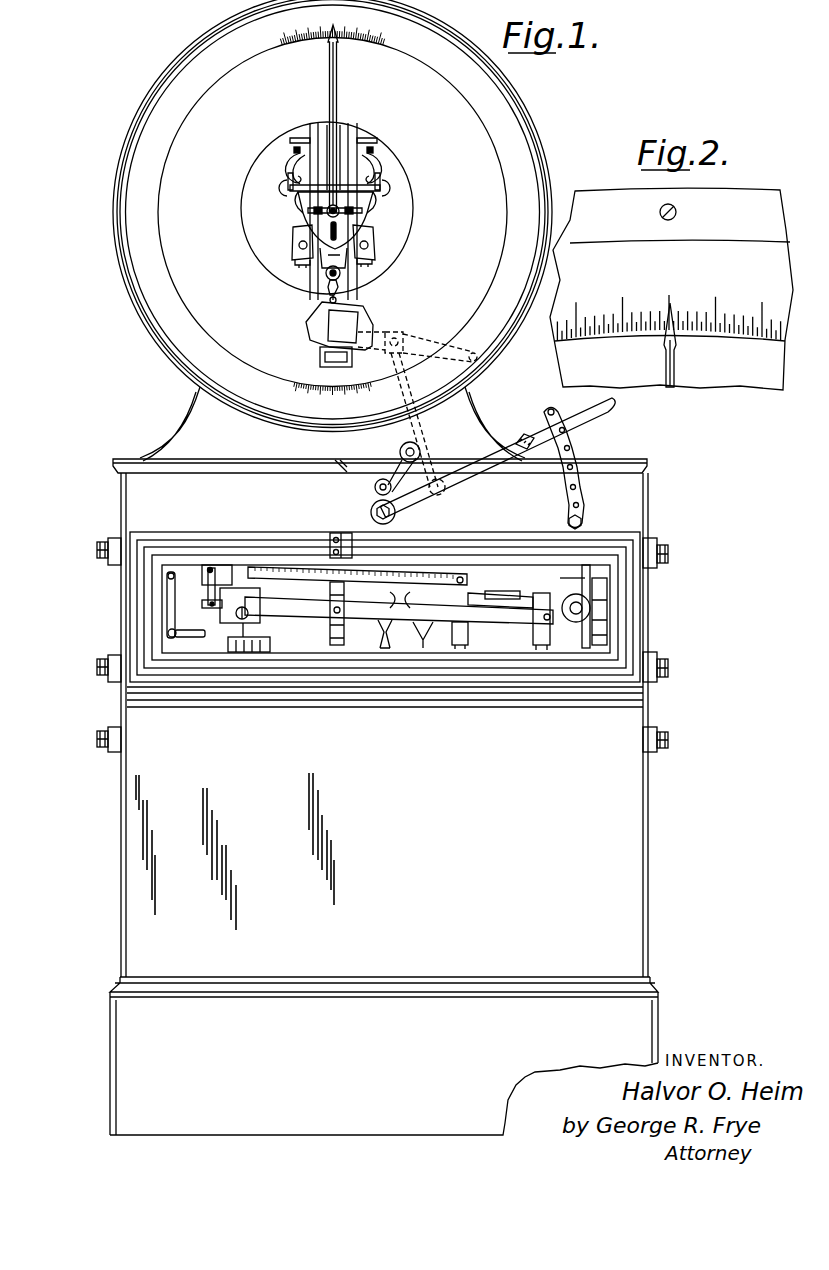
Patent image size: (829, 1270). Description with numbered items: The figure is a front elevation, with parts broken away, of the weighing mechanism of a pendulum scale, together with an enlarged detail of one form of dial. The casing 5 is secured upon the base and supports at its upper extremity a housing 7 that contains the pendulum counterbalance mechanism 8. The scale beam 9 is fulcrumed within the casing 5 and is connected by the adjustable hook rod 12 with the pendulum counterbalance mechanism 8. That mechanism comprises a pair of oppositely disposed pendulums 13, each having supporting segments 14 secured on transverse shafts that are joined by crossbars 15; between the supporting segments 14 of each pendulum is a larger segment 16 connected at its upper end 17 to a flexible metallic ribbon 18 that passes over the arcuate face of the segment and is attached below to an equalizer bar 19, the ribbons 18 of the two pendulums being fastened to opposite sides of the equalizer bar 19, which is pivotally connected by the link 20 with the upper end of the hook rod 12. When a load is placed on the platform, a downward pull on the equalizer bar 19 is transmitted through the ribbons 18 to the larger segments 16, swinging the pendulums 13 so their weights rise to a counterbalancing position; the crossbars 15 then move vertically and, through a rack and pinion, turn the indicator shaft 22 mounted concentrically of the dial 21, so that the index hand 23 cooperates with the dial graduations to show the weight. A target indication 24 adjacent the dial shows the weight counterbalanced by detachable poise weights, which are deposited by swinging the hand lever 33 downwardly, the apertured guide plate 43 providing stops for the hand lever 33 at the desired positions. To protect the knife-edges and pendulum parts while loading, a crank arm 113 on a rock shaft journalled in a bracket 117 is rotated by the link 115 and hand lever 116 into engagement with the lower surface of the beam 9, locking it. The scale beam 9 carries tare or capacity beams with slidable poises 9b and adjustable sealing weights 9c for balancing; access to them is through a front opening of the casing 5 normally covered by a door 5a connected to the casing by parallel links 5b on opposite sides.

In FIG. 1, the casing 5 is at (640, 818).
In FIG. 1, the door 5a is at (623, 612).
In FIG. 1, the parallel links 5b is at (109, 620).
In FIG. 1, the housing 7 is at (530, 110).
In FIG. 1, the pendulum counterbalance mechanism 8 is at (375, 208).
In FIG. 1, the scale beam 9 is at (470, 597).
In FIG. 1, the slidable poises 9b is at (224, 603).
In FIG. 1, the sealing weights 9c is at (510, 593).
In FIG. 1, the adjustable hook rod 12 is at (322, 300).
In FIG. 1, the pendulums 13 is at (295, 247).
In FIG. 1, the supporting segments 14 is at (372, 180).
In FIG. 1, the crossbars 15 is at (381, 194).
In FIG. 1, the larger segment 16 is at (373, 152).
In FIG. 1, the upper end connection 17 is at (295, 150).
In FIG. 1, the flexible metallic ribbon 18 is at (297, 156).
In FIG. 1, the equalizer bar 19 is at (341, 273).
In FIG. 1, the link 20 is at (339, 287).
In FIG. 1, the dial 21 is at (437, 40).
In FIG. 2, the dial 21 is at (697, 253).
In FIG. 1, the indicator shaft 22 is at (310, 214).
In FIG. 1, the index hand 23 is at (338, 100).
In FIG. 2, the index hand 23 is at (674, 372).
In FIG. 1, the target indication 24 is at (320, 357).
In FIG. 1, the hand lever 33 is at (469, 471).
In FIG. 1, the guide plate 43 is at (573, 455).
In FIG. 1, the crank arm 113 is at (182, 632).
In FIG. 1, the link 115 is at (207, 569).
In FIG. 1, the hand lever 116 is at (401, 448).
In FIG. 1, the bracket 117 is at (176, 642).